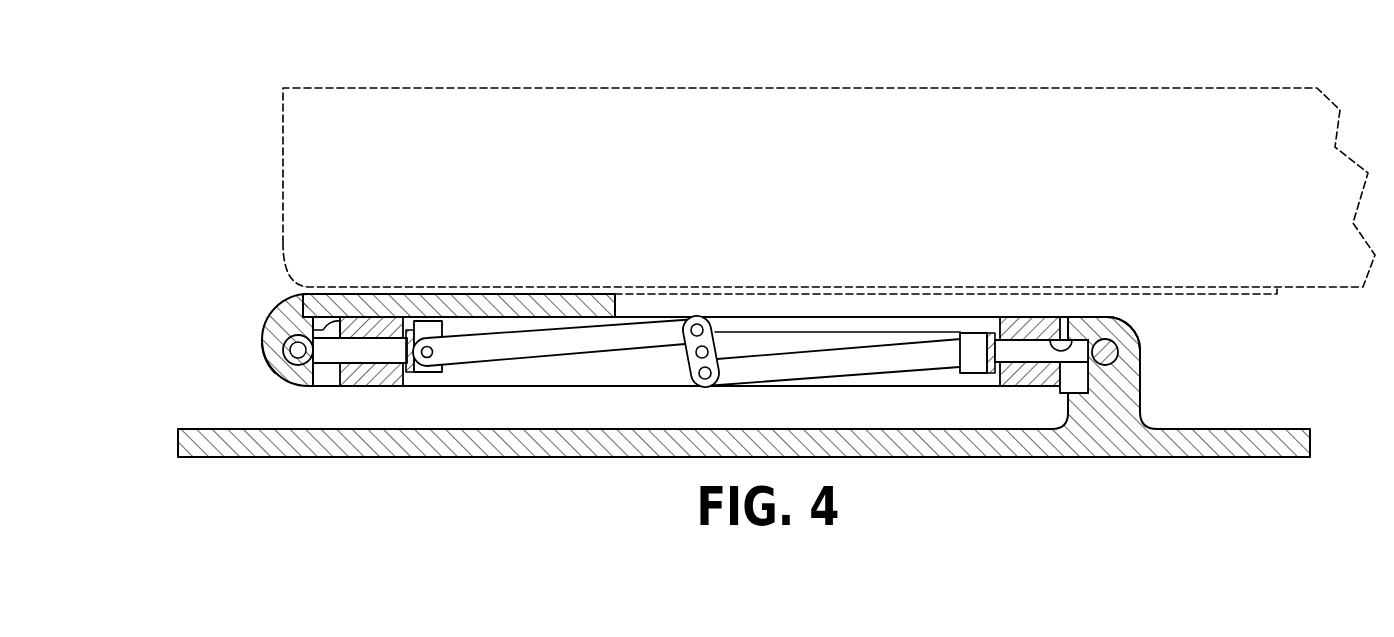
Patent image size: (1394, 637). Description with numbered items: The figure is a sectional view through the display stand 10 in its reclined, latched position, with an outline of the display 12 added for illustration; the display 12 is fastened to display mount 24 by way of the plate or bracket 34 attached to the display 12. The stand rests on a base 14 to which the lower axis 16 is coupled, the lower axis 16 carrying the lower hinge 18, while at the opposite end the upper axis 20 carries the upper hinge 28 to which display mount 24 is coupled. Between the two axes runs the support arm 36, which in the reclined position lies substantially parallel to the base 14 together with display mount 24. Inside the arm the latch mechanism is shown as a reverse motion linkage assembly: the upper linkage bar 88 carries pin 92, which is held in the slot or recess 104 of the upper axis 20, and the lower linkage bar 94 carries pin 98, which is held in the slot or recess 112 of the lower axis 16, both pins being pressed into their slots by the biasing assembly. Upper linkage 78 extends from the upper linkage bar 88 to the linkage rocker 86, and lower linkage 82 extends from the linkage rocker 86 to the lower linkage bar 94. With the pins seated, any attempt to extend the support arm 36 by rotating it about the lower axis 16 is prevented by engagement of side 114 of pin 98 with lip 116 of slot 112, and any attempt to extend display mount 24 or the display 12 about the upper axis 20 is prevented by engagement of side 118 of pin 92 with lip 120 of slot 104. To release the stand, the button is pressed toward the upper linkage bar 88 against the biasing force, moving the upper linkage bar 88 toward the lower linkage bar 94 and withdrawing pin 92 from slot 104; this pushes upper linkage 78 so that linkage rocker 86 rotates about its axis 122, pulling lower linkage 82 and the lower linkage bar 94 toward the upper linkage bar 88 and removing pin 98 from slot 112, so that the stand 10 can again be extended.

The display stand 10 is at (578, 259).
The display 12 is at (800, 87).
The base 14 is at (197, 429).
The lower axis 16 is at (1136, 319).
The lower hinge 18 is at (1140, 334).
The upper axis 20 is at (268, 300).
The display mount 24 is at (476, 300).
The upper hinge 28 is at (268, 366).
The plate or bracket 34 is at (1252, 294).
The support arm 36 is at (858, 317).
The upper linkage 78 is at (556, 350).
The lower linkage 82 is at (856, 360).
The linkage rocker 86 is at (679, 368).
The upper linkage bar 88 is at (411, 380).
The pin 92 is at (376, 336).
The lower linkage bar 94 is at (988, 372).
The pin 98 is at (1015, 322).
The slot or recess 104 is at (318, 318).
The slot or recess 112 is at (1080, 378).
The side of pin 114 is at (1078, 340).
The lip of slot 116 is at (1050, 348).
The side of pin 118 is at (333, 386).
The lip of slot 120 is at (268, 341).
The axis 122 is at (702, 324).